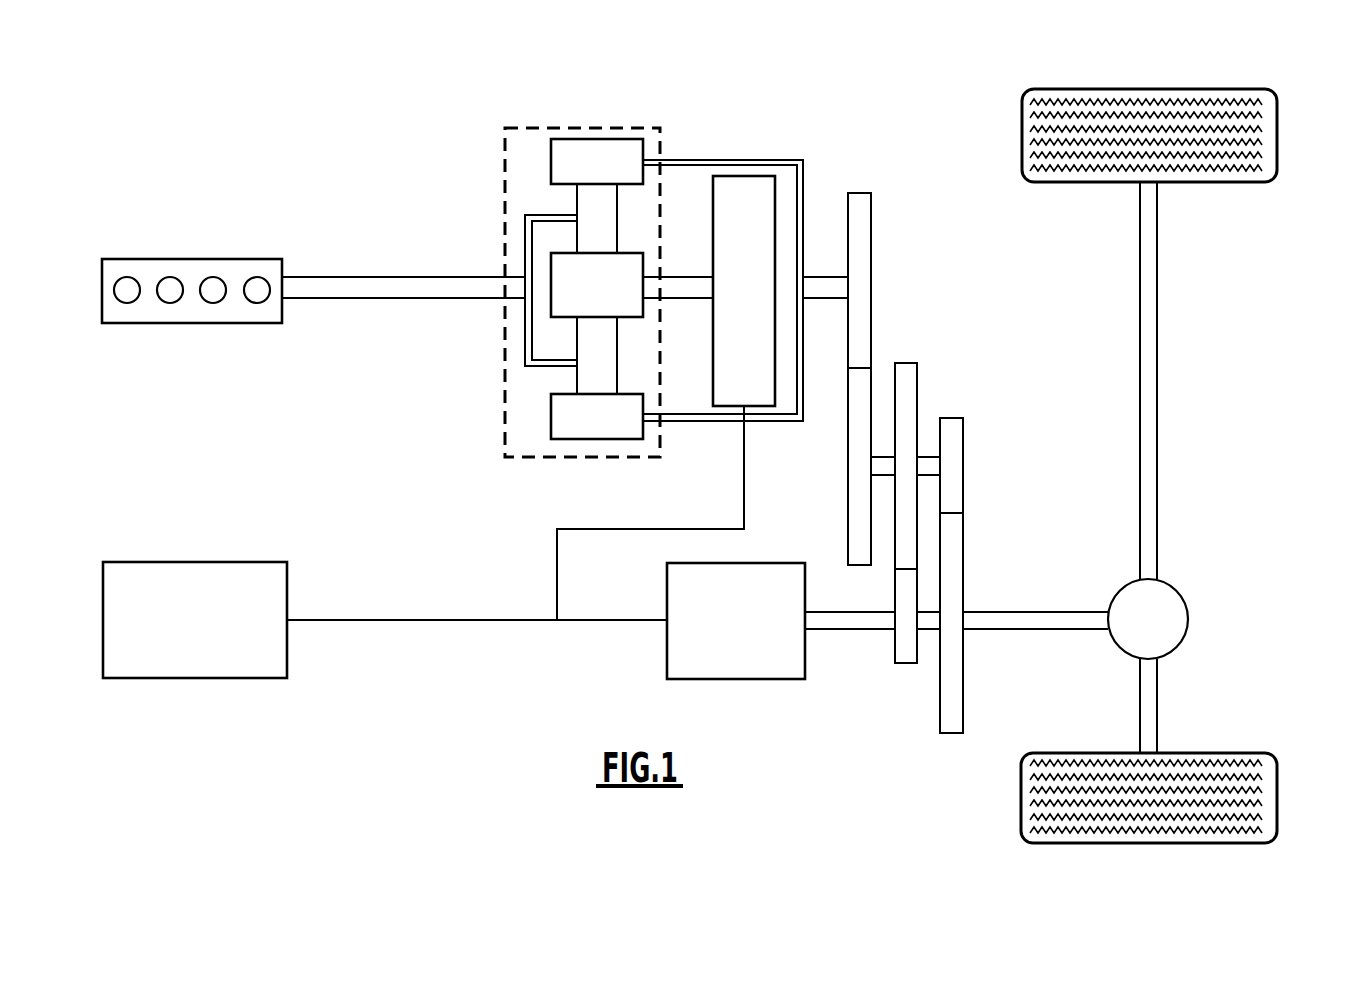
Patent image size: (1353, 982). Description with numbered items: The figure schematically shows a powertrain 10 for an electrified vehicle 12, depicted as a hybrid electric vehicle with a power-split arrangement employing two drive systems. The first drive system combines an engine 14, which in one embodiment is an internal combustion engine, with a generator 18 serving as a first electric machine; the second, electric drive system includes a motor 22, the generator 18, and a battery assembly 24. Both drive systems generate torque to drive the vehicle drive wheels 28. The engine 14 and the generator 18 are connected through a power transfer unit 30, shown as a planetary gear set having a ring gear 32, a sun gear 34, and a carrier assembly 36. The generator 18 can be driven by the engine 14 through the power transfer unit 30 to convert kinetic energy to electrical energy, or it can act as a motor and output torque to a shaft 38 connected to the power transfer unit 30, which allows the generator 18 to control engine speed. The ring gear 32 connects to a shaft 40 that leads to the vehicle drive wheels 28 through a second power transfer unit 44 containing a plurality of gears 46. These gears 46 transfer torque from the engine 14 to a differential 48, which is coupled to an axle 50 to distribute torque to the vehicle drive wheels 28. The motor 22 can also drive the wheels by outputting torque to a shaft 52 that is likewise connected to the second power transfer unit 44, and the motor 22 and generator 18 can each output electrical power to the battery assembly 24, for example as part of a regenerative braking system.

The powertrain 10 is at (342, 153).
The electrified vehicle 12 is at (770, 82).
The engine 14 is at (120, 259).
The generator 18 is at (720, 176).
The motor 22 is at (806, 661).
The battery assembly 24 is at (122, 562).
The vehicle drive wheels 28 is at (1277, 797).
The power transfer unit 30 is at (549, 279).
The ring gear 32 is at (551, 157).
The sun gear 34 is at (551, 270).
The carrier assembly 36 is at (525, 350).
The shaft 38 is at (679, 276).
The shaft 40 is at (823, 277).
The second power transfer unit 44 is at (948, 315).
The gears 46 is at (871, 330).
The differential 48 is at (1183, 641).
The axle 50 is at (1162, 369).
The shaft 52 is at (862, 630).